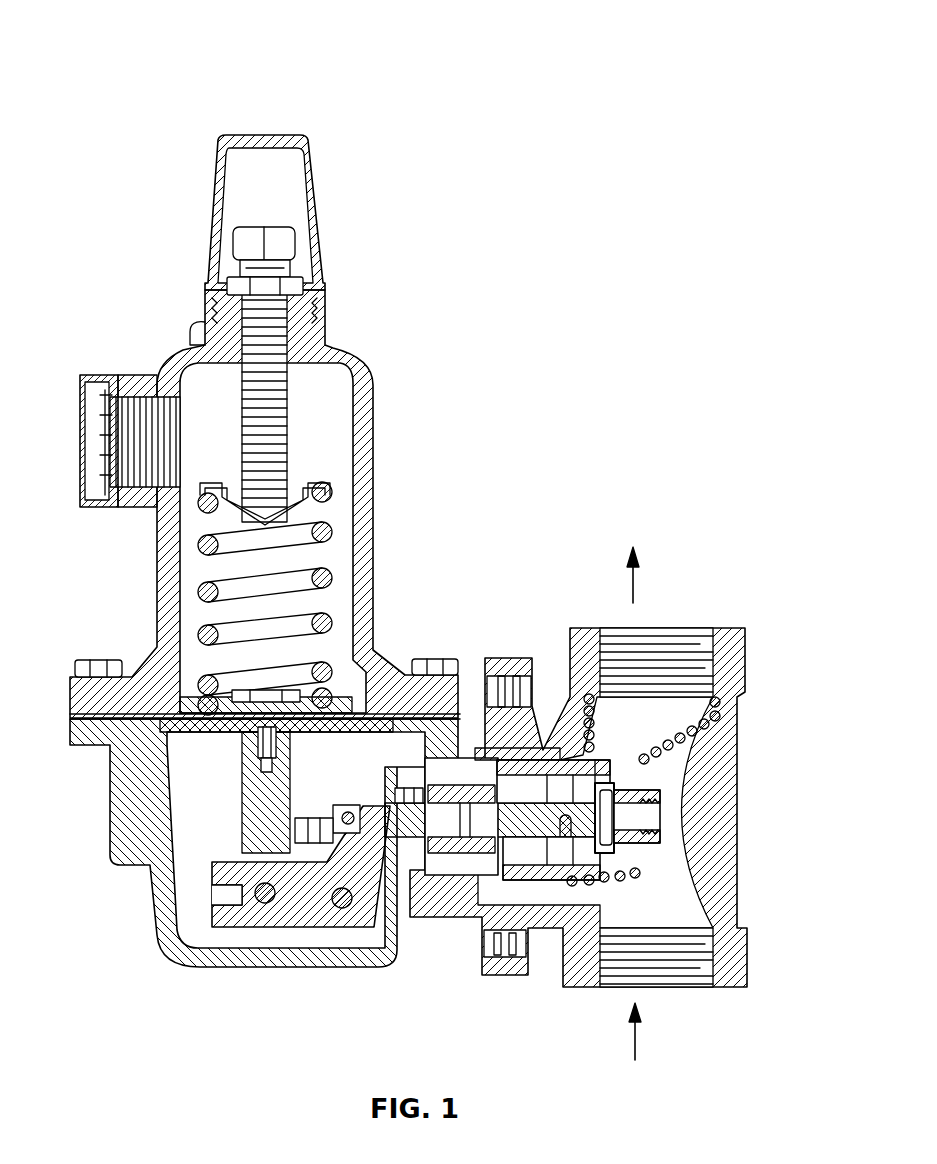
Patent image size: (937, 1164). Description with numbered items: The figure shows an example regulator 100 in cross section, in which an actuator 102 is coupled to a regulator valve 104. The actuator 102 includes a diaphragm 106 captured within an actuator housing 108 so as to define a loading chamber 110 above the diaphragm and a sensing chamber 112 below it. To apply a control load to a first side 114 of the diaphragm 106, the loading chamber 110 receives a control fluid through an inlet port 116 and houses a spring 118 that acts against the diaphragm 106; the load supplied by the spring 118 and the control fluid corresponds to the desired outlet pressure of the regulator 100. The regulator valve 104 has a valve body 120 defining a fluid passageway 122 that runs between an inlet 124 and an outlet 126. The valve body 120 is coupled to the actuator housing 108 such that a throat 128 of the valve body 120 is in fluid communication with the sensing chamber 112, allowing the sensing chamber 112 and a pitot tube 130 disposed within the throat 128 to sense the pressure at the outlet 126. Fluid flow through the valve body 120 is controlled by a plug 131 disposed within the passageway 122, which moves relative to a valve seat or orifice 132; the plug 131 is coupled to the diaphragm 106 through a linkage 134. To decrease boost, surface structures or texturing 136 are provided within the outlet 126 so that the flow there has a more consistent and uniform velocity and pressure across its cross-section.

The regulator 100 is at (131, 56).
The actuator 102 is at (367, 323).
The regulator valve 104 is at (477, 628).
The diaphragm 106 is at (175, 732).
The actuator housing 108 is at (160, 574).
The loading chamber 110 is at (232, 433).
The sensing chamber 112 is at (223, 818).
The first side of the diaphragm 114 is at (180, 727).
The inlet port 116 is at (130, 474).
The spring 118 is at (327, 580).
The valve body 120 is at (735, 656).
The fluid passageway 122 is at (690, 921).
The inlet 124 is at (727, 986).
The outlet 126 is at (713, 632).
The throat 128 is at (470, 860).
The pitot tube 130 is at (600, 758).
The plug 131 is at (660, 798).
The valve seat and/or orifice 132 is at (650, 851).
The linkage 134 is at (413, 848).
The surface structures and/or texturing 136 is at (711, 724).